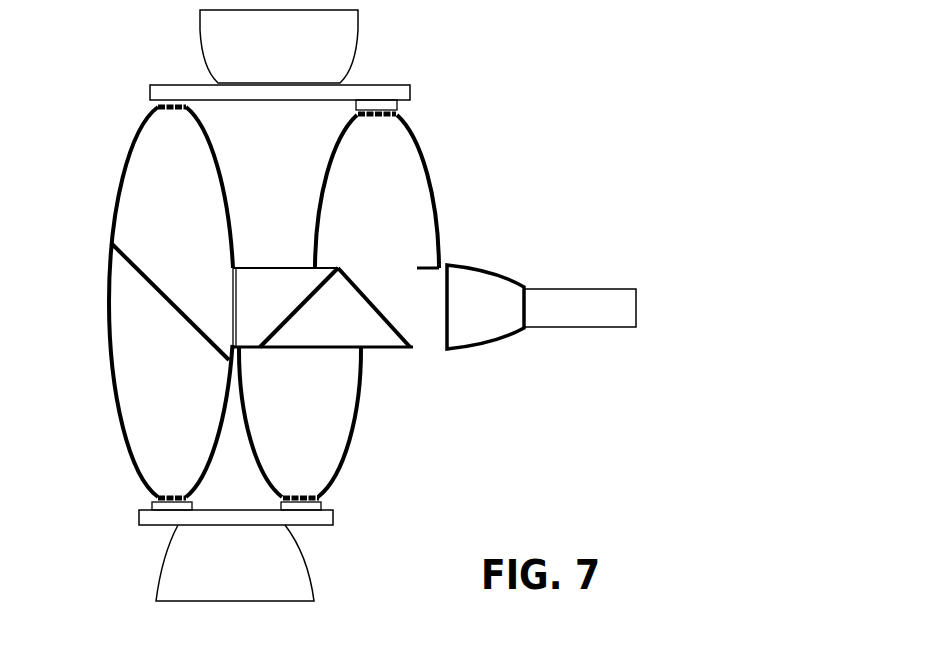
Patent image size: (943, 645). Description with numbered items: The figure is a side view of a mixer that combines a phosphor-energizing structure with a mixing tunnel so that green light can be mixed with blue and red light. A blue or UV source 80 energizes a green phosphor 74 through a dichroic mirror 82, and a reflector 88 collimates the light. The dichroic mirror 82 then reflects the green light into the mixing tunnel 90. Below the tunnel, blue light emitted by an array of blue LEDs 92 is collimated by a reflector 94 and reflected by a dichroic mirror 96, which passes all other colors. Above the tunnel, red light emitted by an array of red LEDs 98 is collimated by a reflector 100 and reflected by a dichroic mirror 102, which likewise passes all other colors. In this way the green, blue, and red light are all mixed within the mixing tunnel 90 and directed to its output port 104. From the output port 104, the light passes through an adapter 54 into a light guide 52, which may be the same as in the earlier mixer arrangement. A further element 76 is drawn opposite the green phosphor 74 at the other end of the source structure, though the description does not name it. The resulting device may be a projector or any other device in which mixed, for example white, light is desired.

The light guide 52 is at (586, 328).
The adapter 54 is at (490, 350).
The green phosphor 74 is at (176, 112).
The lower pad 76 is at (176, 495).
The blue or UV source 80 is at (106, 417).
The dichroic mirror 82 is at (142, 266).
The reflector 88 is at (234, 206).
The mixing tunnel 90 is at (276, 266).
The array of blue LEDs 92 is at (300, 495).
The reflector 94 is at (354, 432).
The dichroic mirror 96 is at (295, 309).
The array of red LEDs 98 is at (376, 118).
The reflector 100 is at (437, 206).
The dichroic mirror 102 is at (366, 294).
The output port 104 is at (447, 298).